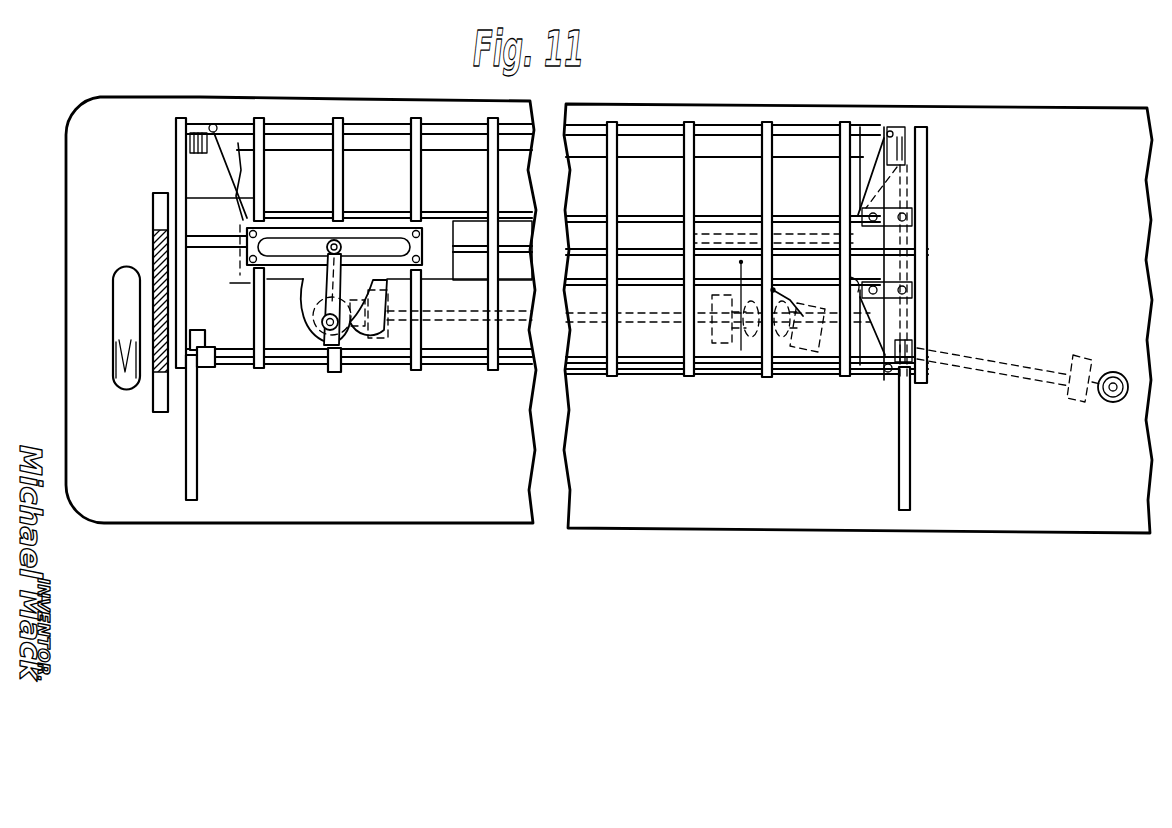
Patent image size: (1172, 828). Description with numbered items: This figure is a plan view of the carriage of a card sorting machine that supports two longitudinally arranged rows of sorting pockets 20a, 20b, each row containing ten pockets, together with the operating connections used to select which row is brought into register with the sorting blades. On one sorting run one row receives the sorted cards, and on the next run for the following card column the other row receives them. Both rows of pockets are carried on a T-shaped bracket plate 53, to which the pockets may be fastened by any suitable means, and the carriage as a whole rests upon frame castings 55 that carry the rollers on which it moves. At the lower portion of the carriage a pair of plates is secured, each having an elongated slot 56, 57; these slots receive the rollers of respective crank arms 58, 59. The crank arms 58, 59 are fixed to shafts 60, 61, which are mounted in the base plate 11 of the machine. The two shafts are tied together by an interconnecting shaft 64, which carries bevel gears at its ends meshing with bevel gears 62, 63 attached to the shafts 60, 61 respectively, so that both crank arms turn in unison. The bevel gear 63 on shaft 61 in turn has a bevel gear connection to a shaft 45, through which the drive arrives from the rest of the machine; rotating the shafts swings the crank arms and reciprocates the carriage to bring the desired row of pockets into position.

The base plate 11 is at (993, 521).
The row of sorting pockets 20a is at (662, 347).
The row of sorting pockets 20b is at (800, 178).
The shaft 45 is at (963, 355).
The T-shaped bracket plate 53 is at (926, 251).
The frame castings 55 is at (198, 171).
The elongated slot 56 is at (396, 248).
The elongated slot 57 is at (720, 347).
The crank arm 58 is at (326, 298).
The crank arm 59 is at (803, 316).
The shaft 60 is at (330, 324).
The shaft 61 is at (766, 379).
The bevel gear 62 is at (345, 328).
The bevel gear 63 is at (775, 340).
The shaft 64 is at (467, 313).